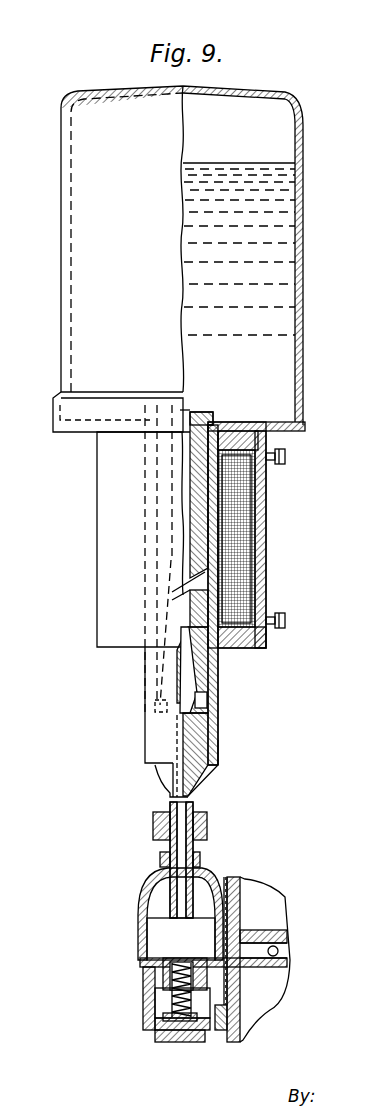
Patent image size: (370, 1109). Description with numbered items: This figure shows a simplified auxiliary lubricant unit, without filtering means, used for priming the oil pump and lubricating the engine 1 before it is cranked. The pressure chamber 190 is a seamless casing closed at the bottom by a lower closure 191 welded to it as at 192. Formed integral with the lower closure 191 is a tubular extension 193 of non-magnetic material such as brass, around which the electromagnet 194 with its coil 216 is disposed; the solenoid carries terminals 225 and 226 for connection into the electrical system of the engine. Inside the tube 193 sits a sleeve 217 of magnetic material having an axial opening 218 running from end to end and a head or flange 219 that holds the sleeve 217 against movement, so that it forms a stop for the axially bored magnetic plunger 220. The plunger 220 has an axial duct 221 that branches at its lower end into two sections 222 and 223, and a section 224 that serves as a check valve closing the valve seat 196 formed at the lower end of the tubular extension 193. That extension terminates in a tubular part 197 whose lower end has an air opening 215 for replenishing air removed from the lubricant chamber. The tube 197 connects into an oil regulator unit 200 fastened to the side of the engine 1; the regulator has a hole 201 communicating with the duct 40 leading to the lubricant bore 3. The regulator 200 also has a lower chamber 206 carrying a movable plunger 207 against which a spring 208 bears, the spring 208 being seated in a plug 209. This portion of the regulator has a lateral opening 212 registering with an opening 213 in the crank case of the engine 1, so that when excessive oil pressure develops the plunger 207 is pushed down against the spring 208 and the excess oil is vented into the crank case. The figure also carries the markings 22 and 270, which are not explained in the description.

The engine 1 is at (275, 893).
The lubricant bore 3 is at (279, 952).
The duct 40 is at (263, 928).
The pressure chamber 190 is at (298, 221).
The lower closure 191 is at (305, 430).
The weld 192 is at (302, 400).
The tubular extension 193 is at (262, 575).
The electromagnet 194 is at (266, 509).
The valve seat 196 is at (185, 713).
The tubular part 197 is at (190, 796).
The oil regulator unit 200 is at (140, 890).
The hole 201 is at (215, 950).
The lower chamber 206 is at (150, 972).
The movable plunger 207 is at (180, 956).
The spring 208 is at (172, 1005).
The plug 209 is at (170, 1043).
The lateral opening 212 is at (217, 1032).
The opening 213 is at (233, 985).
The air opening 215 is at (210, 884).
The coil 216 is at (255, 535).
The sleeve 217 is at (192, 483).
The axial opening 218 is at (186, 533).
The head or flange 219 is at (205, 415).
The plunger 220 is at (225, 648).
The axial duct 221 is at (185, 603).
The duct section 222 is at (150, 668).
The duct section 223 is at (198, 676).
The check valve section 224 is at (183, 702).
The terminal 225 is at (284, 618).
The terminal 226 is at (287, 458).
The partial numeral 22 is at (362, 241).
The partial numeral 270 is at (361, 665).